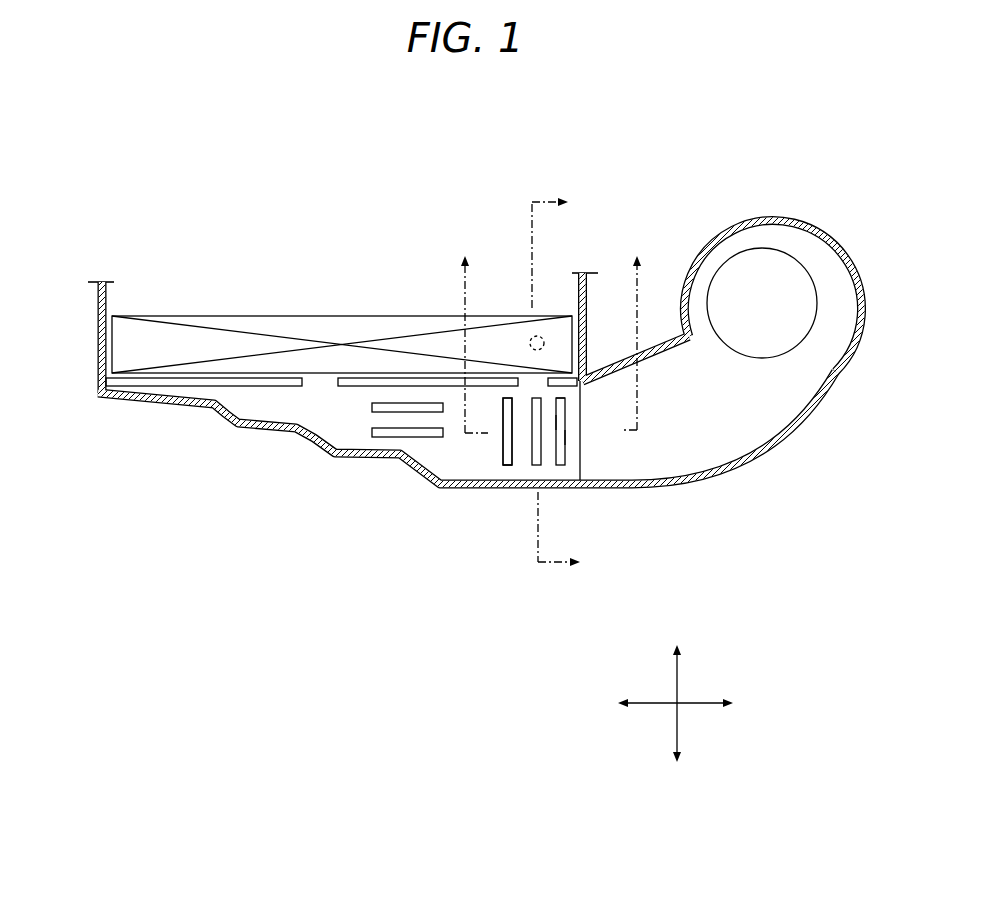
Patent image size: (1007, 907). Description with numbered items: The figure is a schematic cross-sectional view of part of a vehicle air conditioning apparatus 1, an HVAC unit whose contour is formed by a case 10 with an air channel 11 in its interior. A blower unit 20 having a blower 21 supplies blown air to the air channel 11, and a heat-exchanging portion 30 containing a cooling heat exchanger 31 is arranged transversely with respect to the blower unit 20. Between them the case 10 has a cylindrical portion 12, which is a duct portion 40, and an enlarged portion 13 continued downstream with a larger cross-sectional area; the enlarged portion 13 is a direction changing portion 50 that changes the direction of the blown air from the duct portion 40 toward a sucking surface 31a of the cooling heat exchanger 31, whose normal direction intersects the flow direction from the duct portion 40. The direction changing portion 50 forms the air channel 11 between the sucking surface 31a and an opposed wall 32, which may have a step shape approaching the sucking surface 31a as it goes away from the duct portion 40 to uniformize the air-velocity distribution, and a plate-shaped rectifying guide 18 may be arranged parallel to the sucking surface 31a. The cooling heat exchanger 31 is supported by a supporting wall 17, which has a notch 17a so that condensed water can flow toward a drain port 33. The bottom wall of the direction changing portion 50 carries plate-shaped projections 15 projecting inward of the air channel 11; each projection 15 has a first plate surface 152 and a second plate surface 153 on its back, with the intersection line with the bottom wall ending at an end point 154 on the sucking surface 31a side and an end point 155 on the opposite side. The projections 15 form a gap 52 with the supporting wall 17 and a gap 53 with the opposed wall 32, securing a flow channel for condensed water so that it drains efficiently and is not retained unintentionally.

The vehicle air conditioning apparatus 1 is at (733, 142).
The case 10 is at (791, 440).
The air channel 11 is at (443, 472).
The cylindrical portion 12 is at (734, 459).
The duct portion 40 is at (672, 483).
The enlarged portion 13 is at (365, 483).
The direction changing portion 50 is at (393, 460).
The projection 15 is at (503, 462).
The first plate surface 152 is at (565, 438).
The second plate surface 153 is at (565, 426).
The end point 154 is at (565, 396).
The end point 155 is at (562, 468).
The supporting wall 17 is at (257, 377).
The notch 17a is at (312, 377).
The rectifying guide 18 is at (372, 407).
The blower unit 20 is at (808, 227).
The blower 21 is at (805, 260).
The heat-exchanging portion 30 is at (93, 338).
The cooling heat exchanger 31 is at (180, 317).
The sucking surface 31a is at (130, 381).
The opposed wall 32 is at (238, 430).
The drain port 33 is at (539, 336).
The gap 52 is at (505, 396).
The gap 53 is at (508, 476).